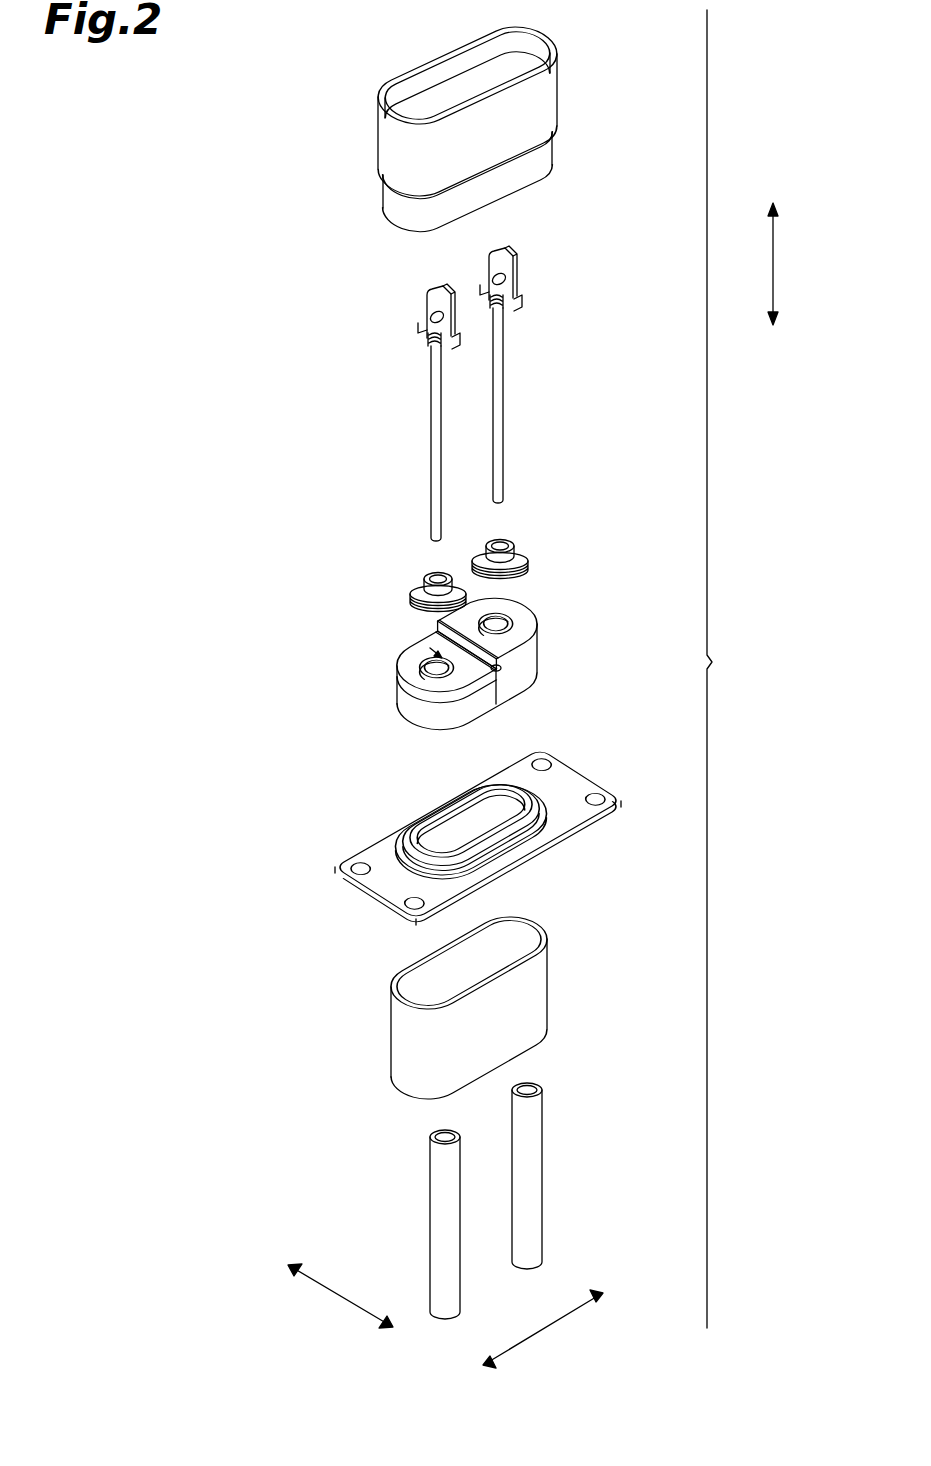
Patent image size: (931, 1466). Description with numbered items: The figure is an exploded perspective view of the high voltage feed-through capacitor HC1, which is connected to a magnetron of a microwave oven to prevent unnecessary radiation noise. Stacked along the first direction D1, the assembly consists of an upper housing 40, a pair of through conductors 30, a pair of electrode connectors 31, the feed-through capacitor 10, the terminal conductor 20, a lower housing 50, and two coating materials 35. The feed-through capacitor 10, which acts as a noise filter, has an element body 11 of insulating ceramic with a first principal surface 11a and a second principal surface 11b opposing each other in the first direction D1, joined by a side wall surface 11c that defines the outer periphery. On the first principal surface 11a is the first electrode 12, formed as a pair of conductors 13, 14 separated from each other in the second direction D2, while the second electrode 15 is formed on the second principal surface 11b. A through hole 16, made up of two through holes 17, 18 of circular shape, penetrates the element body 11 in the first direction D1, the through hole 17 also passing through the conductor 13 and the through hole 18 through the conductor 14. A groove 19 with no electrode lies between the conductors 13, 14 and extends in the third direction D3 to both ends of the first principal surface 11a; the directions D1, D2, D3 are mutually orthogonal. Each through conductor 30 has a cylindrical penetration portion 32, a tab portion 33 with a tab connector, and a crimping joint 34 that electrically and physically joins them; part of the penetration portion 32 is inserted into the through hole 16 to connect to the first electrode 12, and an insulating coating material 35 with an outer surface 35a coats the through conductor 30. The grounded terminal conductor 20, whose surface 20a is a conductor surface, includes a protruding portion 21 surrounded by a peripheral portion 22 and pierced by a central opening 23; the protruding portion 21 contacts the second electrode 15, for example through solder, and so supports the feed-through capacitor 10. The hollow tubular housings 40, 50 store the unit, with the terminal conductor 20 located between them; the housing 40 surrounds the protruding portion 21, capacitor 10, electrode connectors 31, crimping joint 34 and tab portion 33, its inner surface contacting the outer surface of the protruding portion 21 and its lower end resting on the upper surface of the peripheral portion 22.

The feed-through capacitor 10 is at (445, 683).
The element body 11 is at (434, 712).
The first principal surface 11a is at (430, 688).
The second principal surface 11b is at (435, 724).
The side wall surface 11c is at (421, 718).
The first electrode 12 is at (383, 643).
The conductor 13 is at (405, 653).
The conductor 14 is at (446, 623).
The second electrode 15 is at (528, 690).
The through hole 16 is at (545, 616).
The through hole 17 is at (523, 640).
The through hole 18 is at (498, 628).
The groove 19 is at (507, 670).
The terminal conductor 20 is at (478, 822).
The surface 20a is at (384, 889).
The protruding portion 21 is at (413, 834).
The peripheral portion 22 is at (520, 850).
The opening 23 is at (502, 793).
The through conductor 30 is at (469, 393).
The electrode connector 31 is at (524, 548).
The penetration portion 32 is at (346, 289).
The tab portion 33 is at (428, 302).
The crimping joint 34 is at (420, 331).
The coating material 35 is at (484, 1186).
The outer surface 35a is at (438, 1220).
The housing 40 is at (535, 101).
The housing 50 is at (532, 993).
The high voltage feed-through capacitor HC1 is at (740, 669).
The first direction D1 is at (800, 264).
The second direction D2 is at (544, 1334).
The third direction D3 is at (331, 1298).